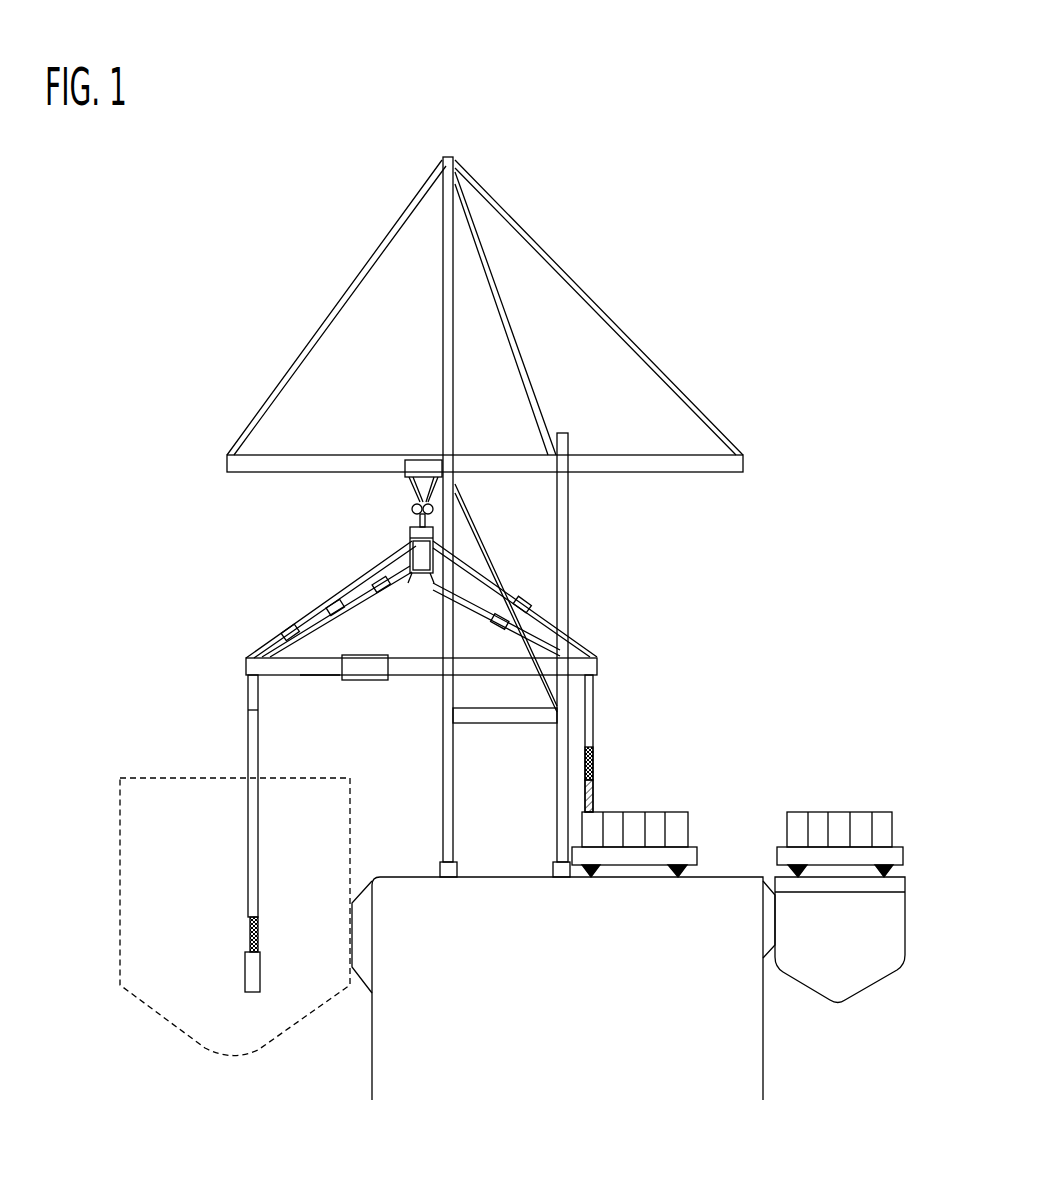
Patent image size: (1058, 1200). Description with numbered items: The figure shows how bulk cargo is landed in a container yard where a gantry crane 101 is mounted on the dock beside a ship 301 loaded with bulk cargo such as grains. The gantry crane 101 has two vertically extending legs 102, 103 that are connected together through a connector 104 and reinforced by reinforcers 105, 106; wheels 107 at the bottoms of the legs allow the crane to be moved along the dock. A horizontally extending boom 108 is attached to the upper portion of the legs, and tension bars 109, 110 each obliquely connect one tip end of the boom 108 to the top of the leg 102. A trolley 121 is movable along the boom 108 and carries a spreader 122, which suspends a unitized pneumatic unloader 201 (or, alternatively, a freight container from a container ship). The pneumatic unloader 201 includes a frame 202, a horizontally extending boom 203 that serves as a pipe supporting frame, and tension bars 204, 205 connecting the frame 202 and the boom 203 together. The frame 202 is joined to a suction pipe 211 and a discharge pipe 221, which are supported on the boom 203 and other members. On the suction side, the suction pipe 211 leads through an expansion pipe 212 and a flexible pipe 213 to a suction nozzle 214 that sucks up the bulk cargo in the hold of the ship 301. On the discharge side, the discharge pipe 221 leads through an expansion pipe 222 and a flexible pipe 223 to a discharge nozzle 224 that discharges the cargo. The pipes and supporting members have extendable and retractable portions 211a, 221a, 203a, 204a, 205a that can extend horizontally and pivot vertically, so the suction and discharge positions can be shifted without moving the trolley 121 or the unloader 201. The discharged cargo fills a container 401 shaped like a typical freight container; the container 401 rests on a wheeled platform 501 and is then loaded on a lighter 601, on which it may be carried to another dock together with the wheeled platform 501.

The gantry crane 101 is at (618, 184).
The leg 102 is at (443, 797).
The leg 103 is at (557, 825).
The connector 104 is at (502, 721).
The reinforcer 105 is at (483, 528).
The reinforcer 106 is at (537, 380).
The wheels 107 is at (450, 877).
The boom 108 is at (677, 473).
The tension bar 109 is at (373, 257).
The tension bar 110 is at (550, 258).
The trolley 121 is at (405, 488).
The spreader 122 is at (408, 531).
The pneumatic unloader 201 is at (347, 548).
The frame 202 is at (413, 582).
The boom 203 is at (402, 678).
The extendable and retractable portion 203a is at (365, 678).
The tension bar 204 is at (283, 632).
The extendable and retractable portion 204a is at (307, 627).
The tension bar 205 is at (582, 643).
The extendable and retractable portion 205a is at (520, 597).
The suction pipe 211 is at (331, 680).
The extendable and retractable portion 211a is at (380, 602).
The expansion pipe 212 is at (250, 742).
The flexible pipe 213 is at (272, 910).
The suction nozzle 214 is at (260, 963).
The discharge pipe 221 is at (478, 615).
The extendable and retractable portion 221a is at (510, 643).
The expansion pipe 222 is at (600, 717).
The flexible pipe 223 is at (599, 752).
The discharge nozzle 224 is at (599, 792).
The ship 301 is at (118, 897).
The container 401 is at (682, 808).
The wheeled platform 501 is at (717, 822).
The lighter 601 is at (907, 925).